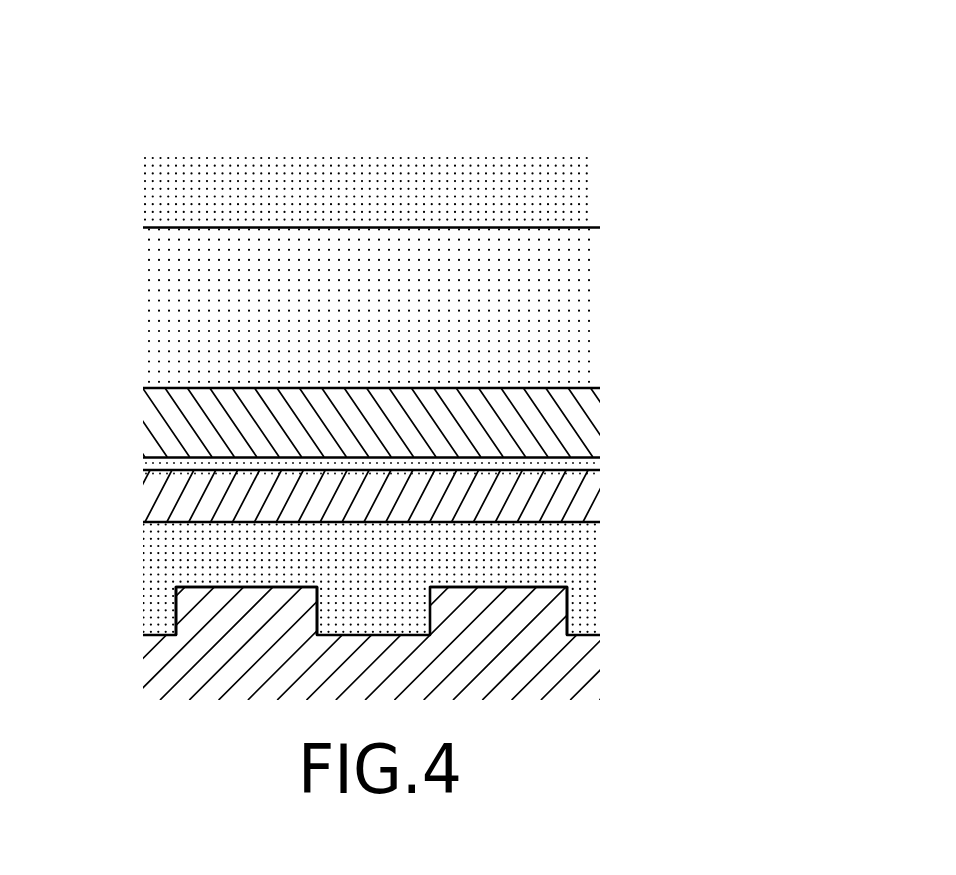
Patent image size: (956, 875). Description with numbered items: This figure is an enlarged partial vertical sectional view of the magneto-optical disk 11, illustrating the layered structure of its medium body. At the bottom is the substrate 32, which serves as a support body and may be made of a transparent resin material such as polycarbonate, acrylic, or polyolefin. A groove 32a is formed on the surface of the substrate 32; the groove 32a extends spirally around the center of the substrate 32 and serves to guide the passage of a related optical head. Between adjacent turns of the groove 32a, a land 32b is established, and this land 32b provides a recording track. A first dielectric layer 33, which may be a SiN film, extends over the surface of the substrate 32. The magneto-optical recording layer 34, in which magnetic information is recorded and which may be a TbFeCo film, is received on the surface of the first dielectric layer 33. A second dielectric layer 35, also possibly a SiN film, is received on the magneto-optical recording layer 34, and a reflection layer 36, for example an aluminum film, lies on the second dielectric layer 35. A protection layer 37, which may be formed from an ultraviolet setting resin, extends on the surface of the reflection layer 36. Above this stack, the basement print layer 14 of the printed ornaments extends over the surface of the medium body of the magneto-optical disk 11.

The magneto-optical disk 11 is at (247, 147).
The basement print layer 14 is at (588, 158).
The protection layer 37 is at (594, 228).
The reflection layer 36 is at (150, 390).
The second dielectric layer 35 is at (597, 457).
The magneto-optical recording layer 34 is at (157, 476).
The first dielectric layer 33 is at (598, 522).
The substrate 32 is at (598, 636).
The groove 32a is at (430, 603).
The land 32b is at (188, 586).